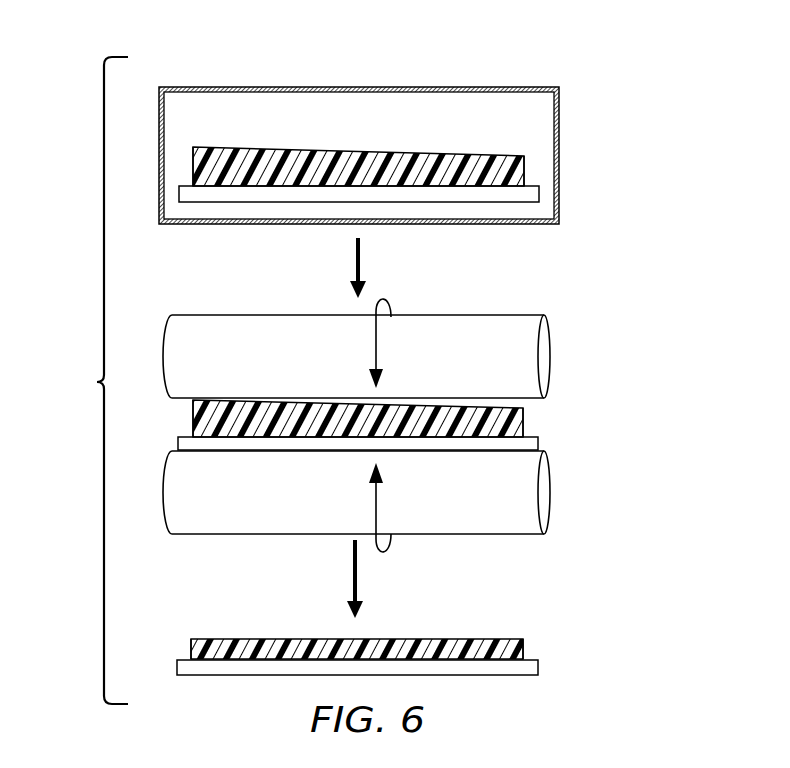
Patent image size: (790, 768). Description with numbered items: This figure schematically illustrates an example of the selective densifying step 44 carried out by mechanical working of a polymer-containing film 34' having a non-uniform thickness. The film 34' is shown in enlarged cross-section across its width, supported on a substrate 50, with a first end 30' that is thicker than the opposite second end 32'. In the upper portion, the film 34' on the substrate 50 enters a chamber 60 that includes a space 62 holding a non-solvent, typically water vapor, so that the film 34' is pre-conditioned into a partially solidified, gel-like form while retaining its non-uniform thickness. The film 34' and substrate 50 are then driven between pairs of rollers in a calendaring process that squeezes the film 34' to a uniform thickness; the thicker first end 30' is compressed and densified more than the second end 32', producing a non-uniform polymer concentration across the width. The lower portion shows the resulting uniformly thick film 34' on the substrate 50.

The selective densifying step 44 is at (98, 382).
The chamber 60 is at (300, 87).
The space 62 is at (428, 108).
The film 34' is at (357, 353).
The first end 30' is at (172, 382).
The second end 32' is at (534, 377).
The substrate 50 is at (200, 195).